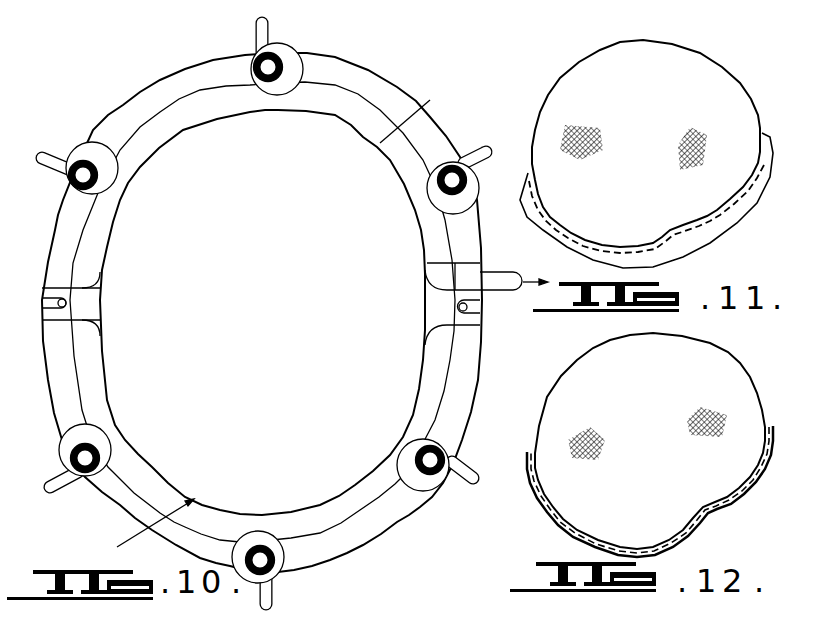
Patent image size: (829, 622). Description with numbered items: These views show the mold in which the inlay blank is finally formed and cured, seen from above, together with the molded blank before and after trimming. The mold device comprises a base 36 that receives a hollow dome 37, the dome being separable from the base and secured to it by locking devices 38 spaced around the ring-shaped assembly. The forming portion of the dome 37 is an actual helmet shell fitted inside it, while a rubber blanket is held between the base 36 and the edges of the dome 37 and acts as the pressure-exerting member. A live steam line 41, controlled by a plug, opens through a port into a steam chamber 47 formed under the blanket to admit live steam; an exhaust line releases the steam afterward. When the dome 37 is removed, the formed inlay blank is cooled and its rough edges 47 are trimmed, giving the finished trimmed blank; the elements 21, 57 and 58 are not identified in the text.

In FIG. 11, the head form 21 is at (730, 92).
In FIG. 12, the head form 21 is at (577, 507).
In FIG. 10, the base 36 is at (178, 74).
In FIG. 10, the hollow dome 37 is at (422, 107).
In FIG. 10, the locking devices 38 is at (93, 152).
In FIG. 10, the live steam line 41 is at (508, 276).
In FIG. 11, the steam chamber 47 is at (700, 247).
In FIG. 12, the part 57 is at (583, 621).
In FIG. 12, the part 58 is at (530, 621).